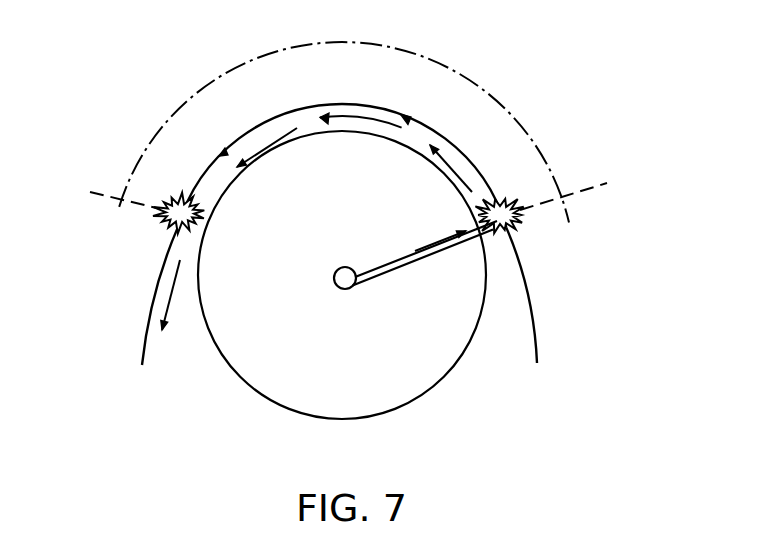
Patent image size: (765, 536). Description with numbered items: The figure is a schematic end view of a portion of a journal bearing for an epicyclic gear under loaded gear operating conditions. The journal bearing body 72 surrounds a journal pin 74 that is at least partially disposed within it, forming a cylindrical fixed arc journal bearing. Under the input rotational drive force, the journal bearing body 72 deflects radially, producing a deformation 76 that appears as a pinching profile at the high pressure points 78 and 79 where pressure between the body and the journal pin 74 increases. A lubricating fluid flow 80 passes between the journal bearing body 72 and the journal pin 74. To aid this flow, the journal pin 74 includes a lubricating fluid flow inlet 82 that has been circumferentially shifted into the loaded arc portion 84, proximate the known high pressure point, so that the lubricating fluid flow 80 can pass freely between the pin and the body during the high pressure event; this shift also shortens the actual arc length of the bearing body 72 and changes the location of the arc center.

The journal bearing body 72 is at (318, 102).
The journal pin 74 is at (220, 358).
The deformation 76 is at (143, 93).
The high pressure point 78 is at (160, 207).
The high pressure point 79 is at (512, 200).
The lubricating fluid flow 80 is at (283, 133).
The lubricating fluid flow inlet 82 is at (480, 232).
The loaded arc portion 84 is at (480, 88).